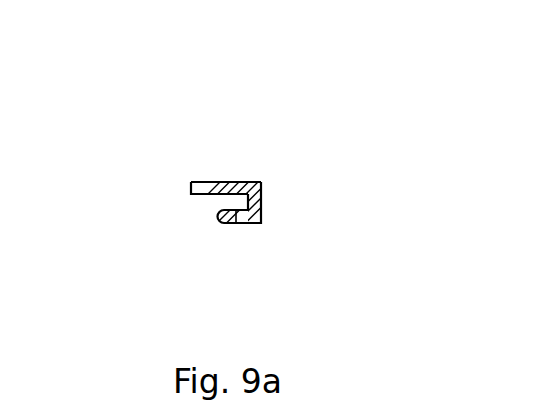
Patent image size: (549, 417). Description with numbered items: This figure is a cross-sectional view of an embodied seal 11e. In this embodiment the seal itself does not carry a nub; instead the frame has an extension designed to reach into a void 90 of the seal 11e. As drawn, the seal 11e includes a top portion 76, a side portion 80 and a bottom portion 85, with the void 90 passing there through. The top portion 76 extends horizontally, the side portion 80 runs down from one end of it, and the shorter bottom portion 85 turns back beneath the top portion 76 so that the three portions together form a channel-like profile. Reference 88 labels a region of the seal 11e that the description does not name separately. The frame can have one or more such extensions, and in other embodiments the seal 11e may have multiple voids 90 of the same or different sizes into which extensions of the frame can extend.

The seal 11e is at (305, 135).
The top portion 76 is at (230, 182).
The side portion 80 is at (265, 200).
The bottom portion 85 is at (228, 223).
The slot 88 is at (211, 206).
The void 90 is at (240, 223).